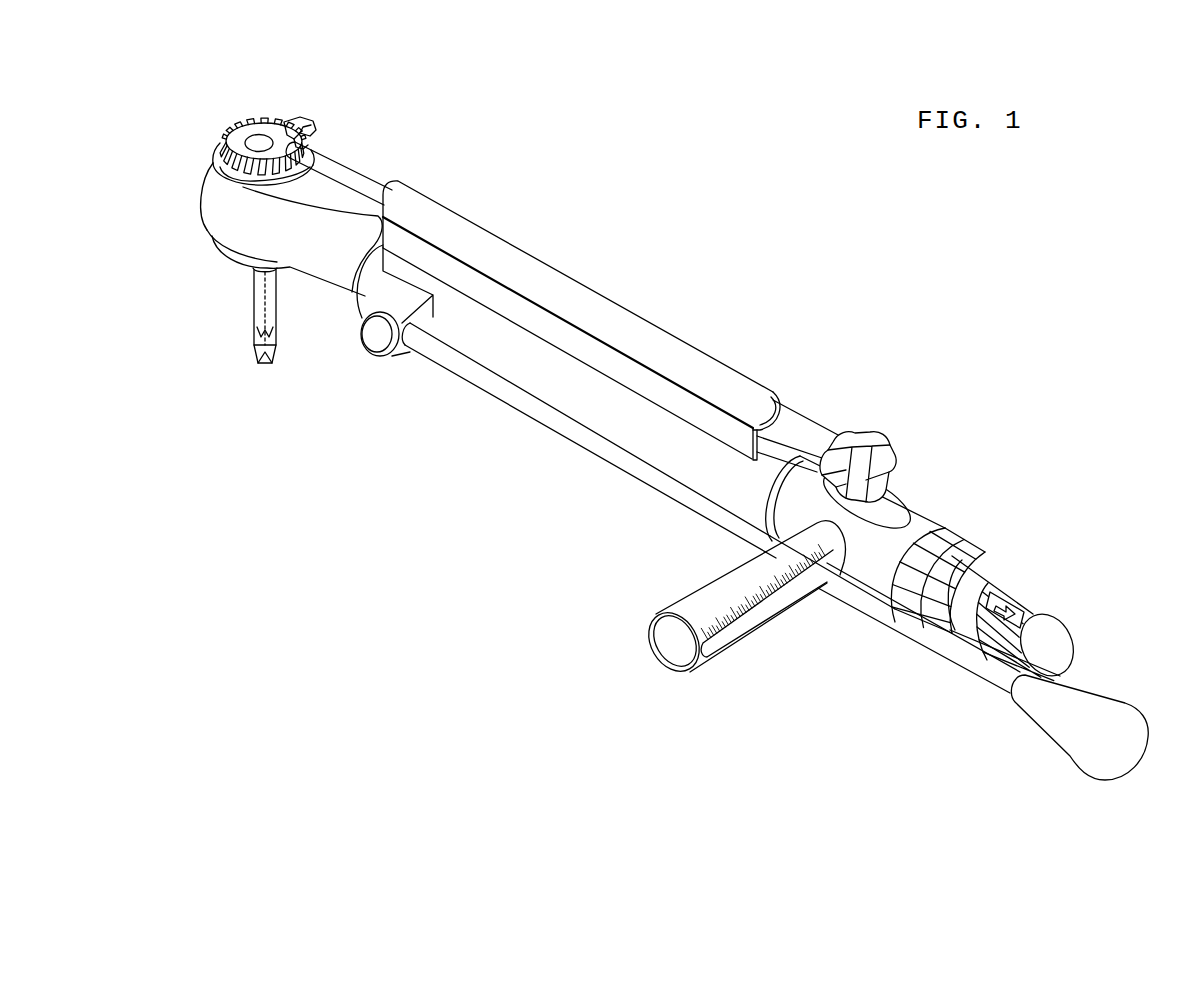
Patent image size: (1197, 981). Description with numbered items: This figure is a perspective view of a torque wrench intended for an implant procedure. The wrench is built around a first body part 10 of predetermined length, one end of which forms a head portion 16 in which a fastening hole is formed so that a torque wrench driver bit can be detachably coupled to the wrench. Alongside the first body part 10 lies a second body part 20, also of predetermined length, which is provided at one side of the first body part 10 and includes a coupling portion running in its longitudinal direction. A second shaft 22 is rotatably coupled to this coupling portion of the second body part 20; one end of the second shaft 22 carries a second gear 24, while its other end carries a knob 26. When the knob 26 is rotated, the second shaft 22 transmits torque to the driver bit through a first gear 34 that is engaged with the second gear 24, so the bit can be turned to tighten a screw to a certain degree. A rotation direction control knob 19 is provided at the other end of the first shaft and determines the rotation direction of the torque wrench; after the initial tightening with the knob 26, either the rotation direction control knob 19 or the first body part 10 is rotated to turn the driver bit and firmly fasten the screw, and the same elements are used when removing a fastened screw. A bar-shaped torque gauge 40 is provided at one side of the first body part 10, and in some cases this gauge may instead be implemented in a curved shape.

The first body part 10 is at (603, 412).
The head portion 16 is at (212, 207).
The rotation direction control knob 19 is at (1023, 593).
The second body part 20 is at (603, 310).
The second shaft 22 is at (353, 170).
The second gear 24 is at (286, 121).
The knob 26 is at (865, 442).
The first gear 34 is at (223, 140).
The bar-shaped torque gauge 40 is at (892, 617).